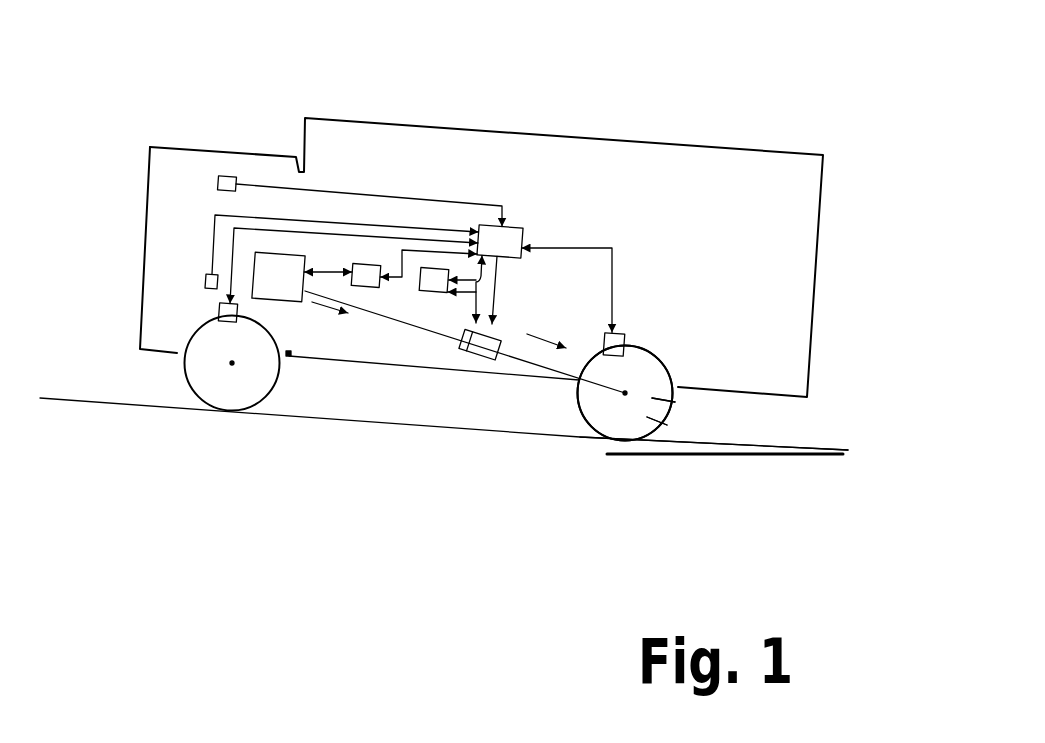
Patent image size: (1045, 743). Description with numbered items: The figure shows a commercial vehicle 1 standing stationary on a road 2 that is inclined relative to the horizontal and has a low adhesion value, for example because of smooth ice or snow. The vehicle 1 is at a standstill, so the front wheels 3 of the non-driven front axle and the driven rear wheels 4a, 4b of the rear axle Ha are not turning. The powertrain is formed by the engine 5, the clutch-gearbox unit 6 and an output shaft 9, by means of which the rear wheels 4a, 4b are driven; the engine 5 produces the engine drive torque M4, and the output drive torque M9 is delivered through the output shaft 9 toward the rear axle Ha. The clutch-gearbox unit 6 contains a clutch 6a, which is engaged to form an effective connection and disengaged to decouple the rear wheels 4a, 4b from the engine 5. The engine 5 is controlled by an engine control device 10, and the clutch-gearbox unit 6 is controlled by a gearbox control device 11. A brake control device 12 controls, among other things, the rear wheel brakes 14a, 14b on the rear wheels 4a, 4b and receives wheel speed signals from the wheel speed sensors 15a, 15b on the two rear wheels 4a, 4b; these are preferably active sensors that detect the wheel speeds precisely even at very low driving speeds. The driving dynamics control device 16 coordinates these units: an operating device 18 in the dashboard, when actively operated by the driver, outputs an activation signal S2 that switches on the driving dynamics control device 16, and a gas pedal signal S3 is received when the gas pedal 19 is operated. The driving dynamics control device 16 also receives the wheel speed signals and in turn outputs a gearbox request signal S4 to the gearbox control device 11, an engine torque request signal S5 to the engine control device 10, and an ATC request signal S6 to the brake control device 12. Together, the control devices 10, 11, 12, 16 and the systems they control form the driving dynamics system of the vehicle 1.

The commercial vehicle 1 is at (178, 490).
The road 2 is at (107, 398).
The front wheels 3 is at (227, 403).
The driven rear wheel 4a is at (657, 383).
The driven rear wheel 4b is at (739, 430).
The engine 5 is at (262, 280).
The clutch-gearbox unit 6 is at (468, 353).
The clutch 6a is at (469, 333).
The output shaft 9 is at (517, 355).
The engine control device 10 is at (363, 288).
The gearbox control device 11 is at (420, 294).
The brake control device 12 is at (627, 333).
The rear wheel brake 14a is at (667, 425).
The rear wheel brake 14b is at (696, 496).
The wheel speed sensor 15a is at (675, 402).
The wheel speed sensor 15b is at (740, 478).
The driving dynamics control device 16 is at (513, 226).
The operating device 18 is at (226, 176).
The gas pedal 19 is at (204, 277).
The engine drive torque M4 is at (322, 303).
The output drive torque M9 is at (566, 342).
The activation signal S2 is at (332, 192).
The gas pedal signal S3 is at (213, 238).
The gearbox request signal S4 is at (477, 360).
The engine torque request signal S5 is at (412, 240).
The ATC request signal S6 is at (573, 248).
The rear axle Ha is at (613, 420).